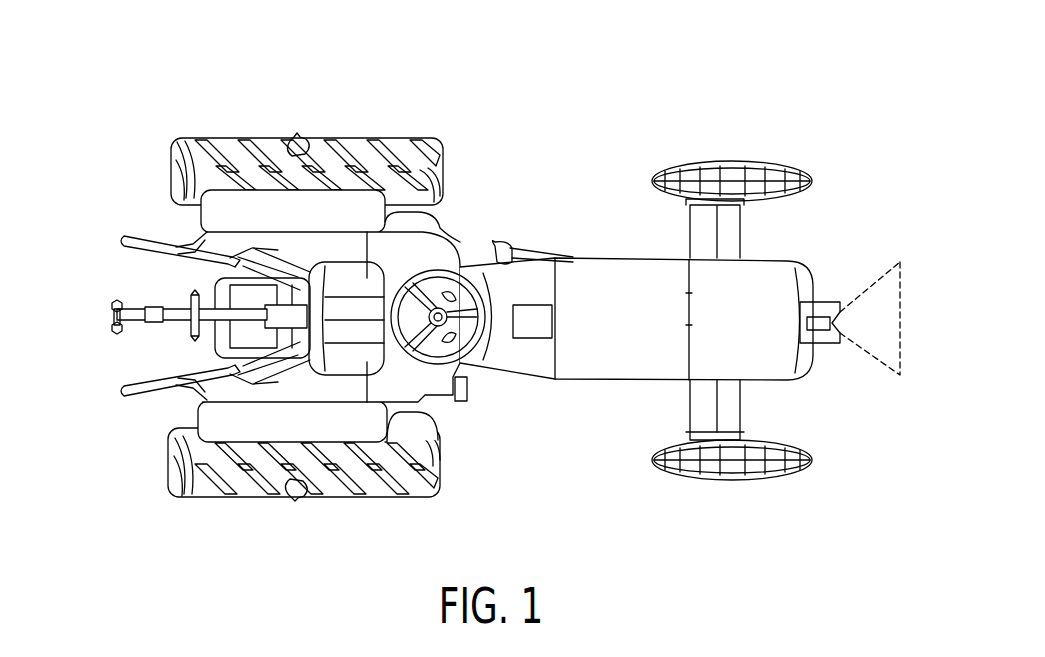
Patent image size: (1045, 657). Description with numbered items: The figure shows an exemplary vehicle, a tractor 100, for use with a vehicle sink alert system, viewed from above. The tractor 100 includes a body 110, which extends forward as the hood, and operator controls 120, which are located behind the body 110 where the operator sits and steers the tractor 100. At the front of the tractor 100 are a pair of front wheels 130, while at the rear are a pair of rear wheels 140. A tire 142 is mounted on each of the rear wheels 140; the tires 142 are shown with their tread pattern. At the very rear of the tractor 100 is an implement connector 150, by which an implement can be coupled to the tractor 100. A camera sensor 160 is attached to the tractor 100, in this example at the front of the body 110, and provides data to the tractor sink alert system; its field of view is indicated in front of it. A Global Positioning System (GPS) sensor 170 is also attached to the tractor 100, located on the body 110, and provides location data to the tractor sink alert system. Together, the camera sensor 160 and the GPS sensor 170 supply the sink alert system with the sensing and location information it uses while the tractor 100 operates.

The tractor 100 is at (838, 100).
The body 110 is at (585, 195).
The operator controls 120 is at (475, 245).
The front wheels 130 is at (766, 161).
The rear wheels 140 is at (332, 126).
The tire 142 is at (232, 137).
The implement connector 150 is at (106, 245).
The camera sensor 160 is at (822, 301).
The Global Positioning System (GPS) sensor 170 is at (535, 327).